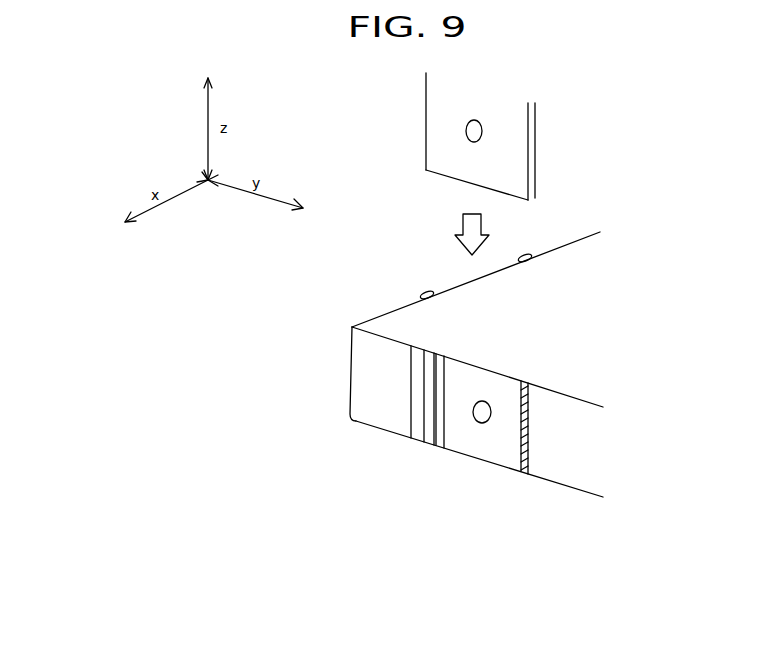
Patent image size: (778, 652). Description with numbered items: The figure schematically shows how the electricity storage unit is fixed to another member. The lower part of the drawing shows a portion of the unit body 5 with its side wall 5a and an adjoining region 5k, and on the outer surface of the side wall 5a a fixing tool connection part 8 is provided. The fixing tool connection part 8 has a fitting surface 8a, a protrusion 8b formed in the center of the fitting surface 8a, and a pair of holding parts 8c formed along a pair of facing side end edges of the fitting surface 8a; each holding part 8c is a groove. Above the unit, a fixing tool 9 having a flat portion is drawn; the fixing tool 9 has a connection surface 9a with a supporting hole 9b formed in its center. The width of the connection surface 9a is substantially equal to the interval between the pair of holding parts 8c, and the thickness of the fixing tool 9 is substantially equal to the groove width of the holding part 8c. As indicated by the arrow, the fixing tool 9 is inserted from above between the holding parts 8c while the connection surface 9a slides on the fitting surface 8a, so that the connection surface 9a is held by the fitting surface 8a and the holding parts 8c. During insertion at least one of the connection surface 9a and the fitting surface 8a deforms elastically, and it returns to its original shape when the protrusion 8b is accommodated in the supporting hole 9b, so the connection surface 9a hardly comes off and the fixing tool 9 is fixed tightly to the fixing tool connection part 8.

The housing body 5 is at (430, 383).
The side wall 5a is at (385, 432).
The side wall of housing 5k is at (372, 397).
The fixing tool connection part 8 is at (453, 383).
The fitting surface 8a is at (497, 443).
The protrusion 8b is at (459, 449).
The holding part 8c is at (430, 435).
The fixing tool 9 is at (539, 136).
The connection surface 9a is at (510, 180).
The supporting hole 9b is at (496, 143).